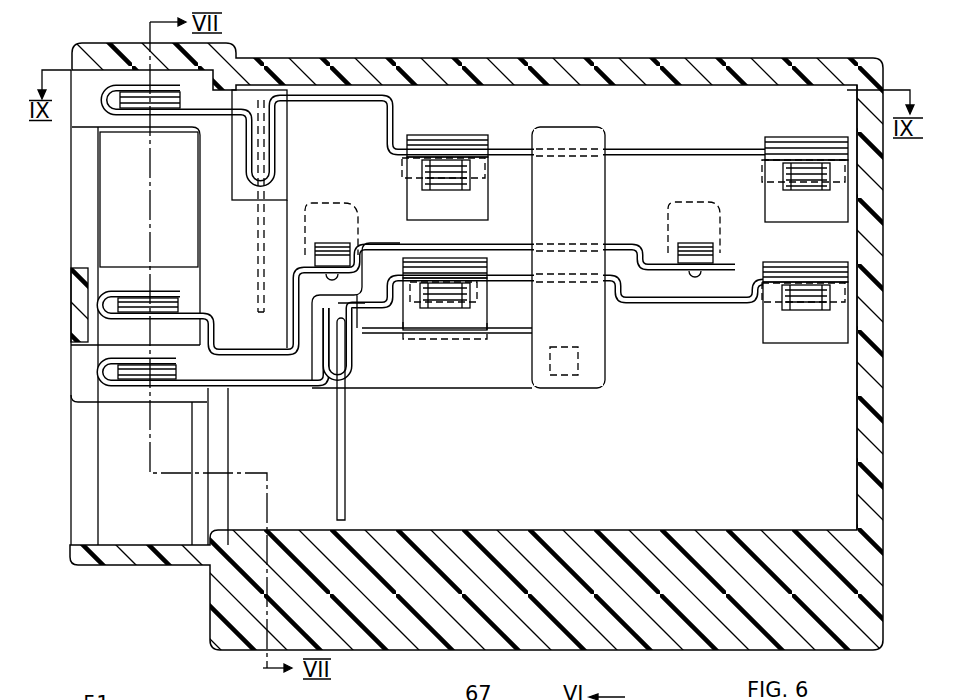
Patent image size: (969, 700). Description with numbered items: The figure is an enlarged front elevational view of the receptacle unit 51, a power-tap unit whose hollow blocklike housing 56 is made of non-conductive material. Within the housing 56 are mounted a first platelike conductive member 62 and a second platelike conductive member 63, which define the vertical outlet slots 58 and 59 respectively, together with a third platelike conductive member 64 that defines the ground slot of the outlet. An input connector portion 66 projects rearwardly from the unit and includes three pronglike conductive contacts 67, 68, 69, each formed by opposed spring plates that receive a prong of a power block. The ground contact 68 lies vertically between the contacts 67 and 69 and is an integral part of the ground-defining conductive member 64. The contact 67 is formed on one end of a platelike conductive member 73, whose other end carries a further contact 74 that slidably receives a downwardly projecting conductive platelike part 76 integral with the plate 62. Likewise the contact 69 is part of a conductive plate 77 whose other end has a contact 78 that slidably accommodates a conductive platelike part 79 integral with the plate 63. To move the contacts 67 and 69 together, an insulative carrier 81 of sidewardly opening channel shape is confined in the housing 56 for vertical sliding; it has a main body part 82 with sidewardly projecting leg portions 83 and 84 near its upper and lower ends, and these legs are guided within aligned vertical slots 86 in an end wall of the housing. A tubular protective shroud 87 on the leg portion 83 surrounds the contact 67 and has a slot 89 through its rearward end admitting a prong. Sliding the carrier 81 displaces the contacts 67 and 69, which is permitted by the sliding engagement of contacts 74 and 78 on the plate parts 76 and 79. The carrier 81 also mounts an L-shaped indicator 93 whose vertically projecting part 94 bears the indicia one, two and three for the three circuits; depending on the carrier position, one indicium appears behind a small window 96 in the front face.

The receptacle unit 51 is at (716, 58).
The housing 56 is at (870, 433).
The vertical slot 58 is at (812, 173).
The vertical slot 59 is at (807, 297).
The first platelike conductive member 62 is at (675, 157).
The second platelike conductive member 63 is at (688, 302).
The third platelike conductive member 64 is at (637, 250).
The pronglike conductive contact 67 is at (143, 114).
The ground contact 68 is at (138, 292).
The pronglike conductive contact 69 is at (135, 385).
The platelike conductive member 73 is at (213, 114).
The contact 74 is at (274, 148).
The conductive platelike part 76 is at (257, 228).
The conductive plate 77 is at (280, 386).
The contact 78 is at (352, 352).
The conductive platelike part 79 is at (345, 459).
The carrier 81 is at (294, 208).
The main body part 82 is at (230, 199).
The leg portion 83 is at (80, 117).
The leg portion 84 is at (90, 390).
The vertical slot 86 is at (83, 232).
The indicator 93 is at (490, 380).
The vertically projecting part 94 is at (578, 140).
The window 96 is at (575, 378).
The slot 89 is at (210, 691).
The input connector portion 66 is at (378, 691).
The tubular protective shroud 87 is at (426, 691).